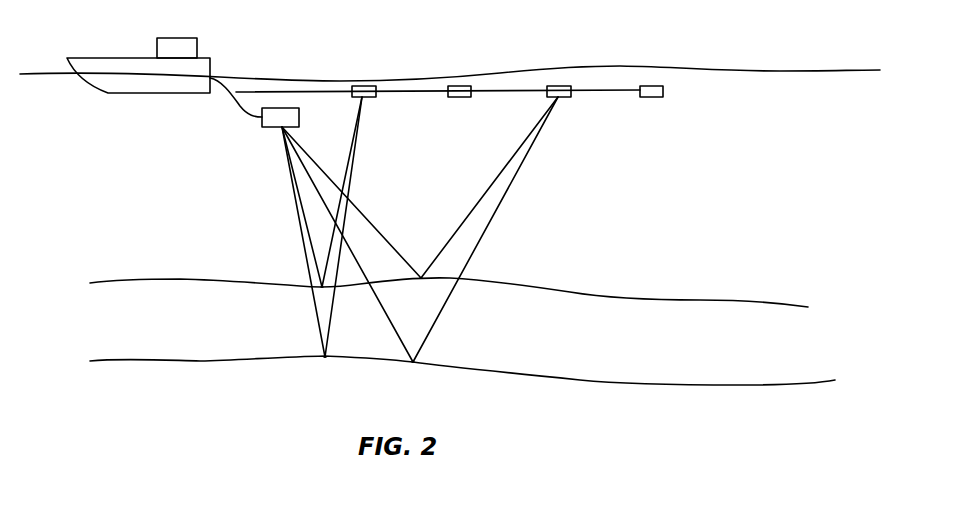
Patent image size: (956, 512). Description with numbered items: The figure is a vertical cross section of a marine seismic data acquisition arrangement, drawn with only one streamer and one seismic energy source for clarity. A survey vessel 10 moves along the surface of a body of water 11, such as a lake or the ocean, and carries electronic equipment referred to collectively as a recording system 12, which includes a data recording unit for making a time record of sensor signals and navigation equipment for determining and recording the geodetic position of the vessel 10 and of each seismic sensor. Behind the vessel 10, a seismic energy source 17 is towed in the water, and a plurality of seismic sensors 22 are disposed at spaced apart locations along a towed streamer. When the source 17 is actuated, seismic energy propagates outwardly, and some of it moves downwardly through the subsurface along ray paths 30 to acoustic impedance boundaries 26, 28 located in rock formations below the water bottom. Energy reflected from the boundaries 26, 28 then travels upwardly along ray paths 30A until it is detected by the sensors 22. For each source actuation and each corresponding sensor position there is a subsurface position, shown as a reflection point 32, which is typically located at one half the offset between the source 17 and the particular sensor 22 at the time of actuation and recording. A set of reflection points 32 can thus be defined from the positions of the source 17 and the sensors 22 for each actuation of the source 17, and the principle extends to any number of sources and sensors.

The survey vessel 10 is at (137, 56).
The body of water 11 is at (768, 70).
The recording system 12 is at (177, 37).
The seismic energy source 17 is at (270, 130).
The seismic sensors 22 is at (362, 86).
The acoustic impedance boundary 26 is at (585, 293).
The acoustic impedance boundary 28 is at (583, 380).
The ray paths 30 is at (296, 203).
The ray paths 30A is at (348, 163).
The reflection points 32 is at (320, 292).